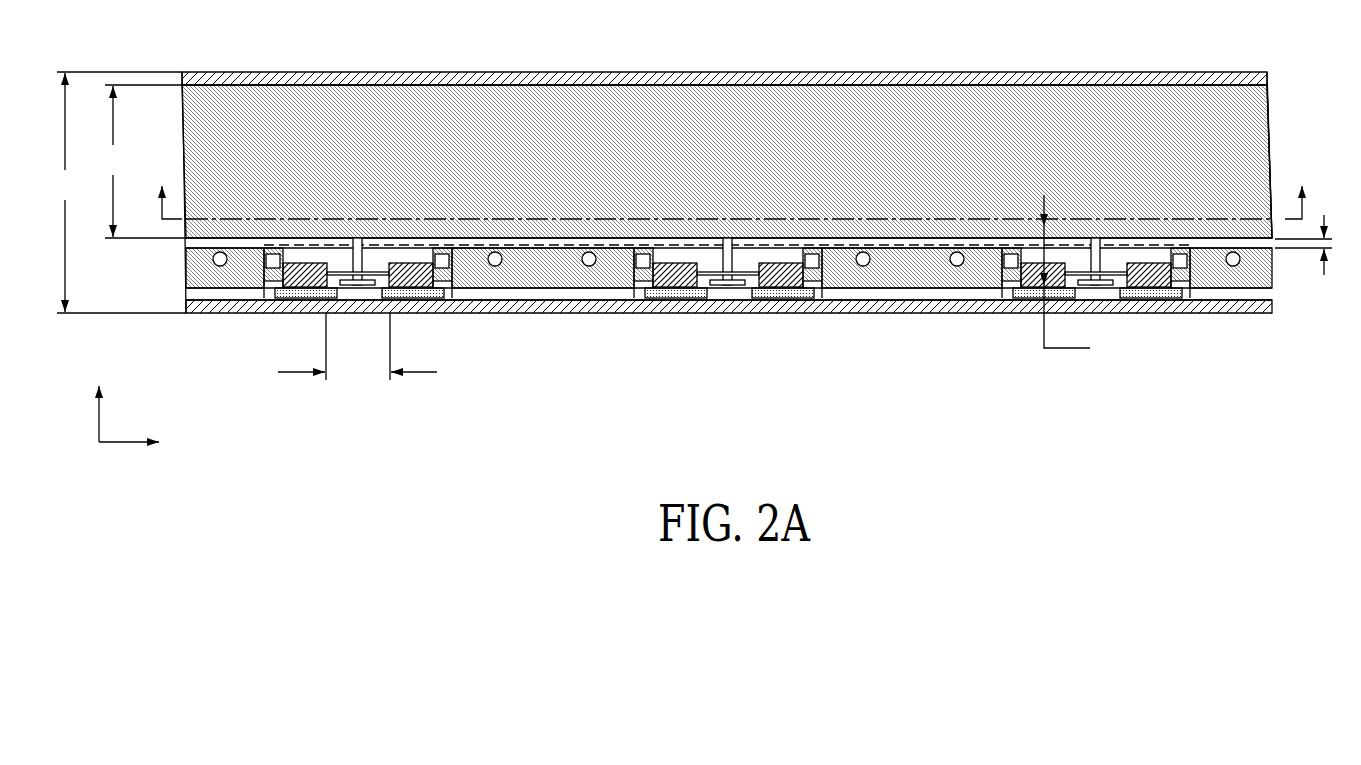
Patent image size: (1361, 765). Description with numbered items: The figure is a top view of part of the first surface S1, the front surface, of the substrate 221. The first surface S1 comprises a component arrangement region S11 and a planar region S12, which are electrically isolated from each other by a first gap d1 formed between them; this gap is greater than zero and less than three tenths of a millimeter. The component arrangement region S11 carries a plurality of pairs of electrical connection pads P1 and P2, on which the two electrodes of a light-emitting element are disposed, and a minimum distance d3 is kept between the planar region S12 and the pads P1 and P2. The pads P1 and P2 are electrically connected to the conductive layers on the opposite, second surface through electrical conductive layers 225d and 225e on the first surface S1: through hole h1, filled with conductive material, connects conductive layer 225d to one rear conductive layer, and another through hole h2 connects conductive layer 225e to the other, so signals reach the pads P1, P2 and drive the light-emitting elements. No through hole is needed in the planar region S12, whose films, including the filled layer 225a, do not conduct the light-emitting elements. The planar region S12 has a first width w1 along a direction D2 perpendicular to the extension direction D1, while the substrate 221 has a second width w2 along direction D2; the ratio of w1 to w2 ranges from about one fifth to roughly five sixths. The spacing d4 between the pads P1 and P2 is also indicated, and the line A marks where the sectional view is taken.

The substrate 221 is at (297, 71).
The first surface S1 is at (545, 103).
The filled layer 225a is at (766, 108).
The planar region S12 is at (1245, 147).
The component arrangement region S11 is at (1265, 272).
The electrical conductive layer 225d is at (541, 275).
The electrical conductive layer 225e is at (931, 275).
The through hole h1 is at (589, 267).
The through hole h2 is at (863, 267).
The electrical connection pad P1 is at (297, 280).
The electrical connection pad P2 is at (410, 280).
The first gap d1 is at (1316, 245).
The minimum distance d3 is at (1067, 272).
The distance between pads d4 is at (357, 346).
The first width w1 is at (142, 161).
The second width w2 is at (116, 192).
The line A- A is at (732, 190).
The extension direction D1 is at (145, 442).
The direction D2 is at (103, 398).